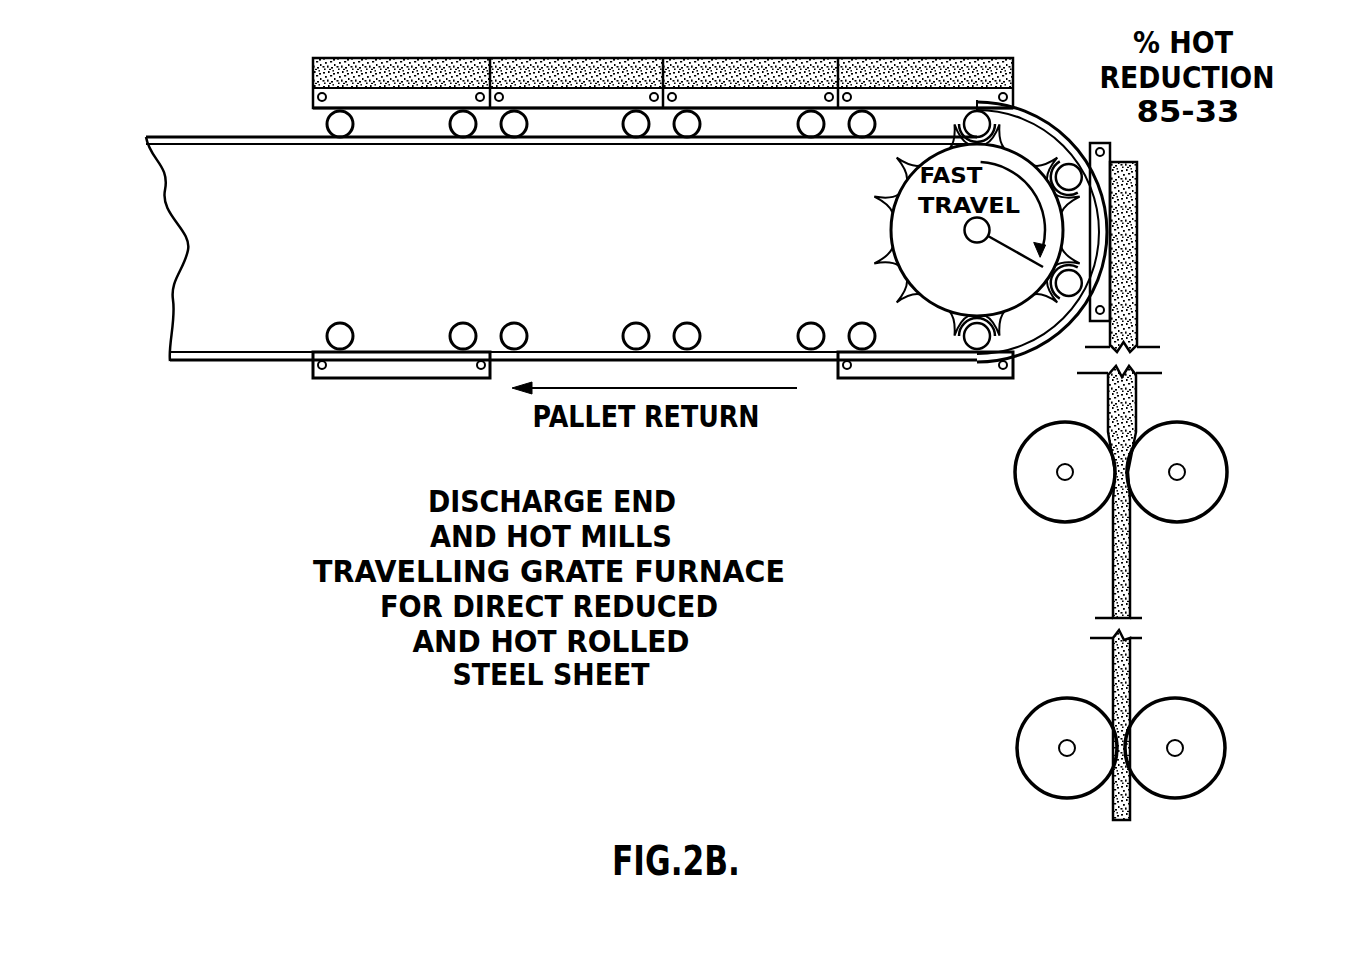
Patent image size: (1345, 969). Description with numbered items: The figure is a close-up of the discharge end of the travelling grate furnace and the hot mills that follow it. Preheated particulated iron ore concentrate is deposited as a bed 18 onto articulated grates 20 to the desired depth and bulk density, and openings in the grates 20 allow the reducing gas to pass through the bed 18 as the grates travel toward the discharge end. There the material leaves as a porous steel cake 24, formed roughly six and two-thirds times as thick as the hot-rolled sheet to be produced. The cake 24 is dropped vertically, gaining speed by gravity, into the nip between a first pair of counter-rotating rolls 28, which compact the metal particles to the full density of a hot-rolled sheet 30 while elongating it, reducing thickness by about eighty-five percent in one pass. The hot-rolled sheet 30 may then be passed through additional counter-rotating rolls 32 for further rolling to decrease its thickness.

The bed 18 is at (598, 78).
The articulated grates 20 is at (370, 107).
The porous steel cake 24 is at (1138, 197).
The first pair of counter-rotating rolls 28 is at (1033, 481).
The hot-rolled sheet 30 is at (1134, 592).
The additional counter-rotating rolls 32 is at (1052, 748).